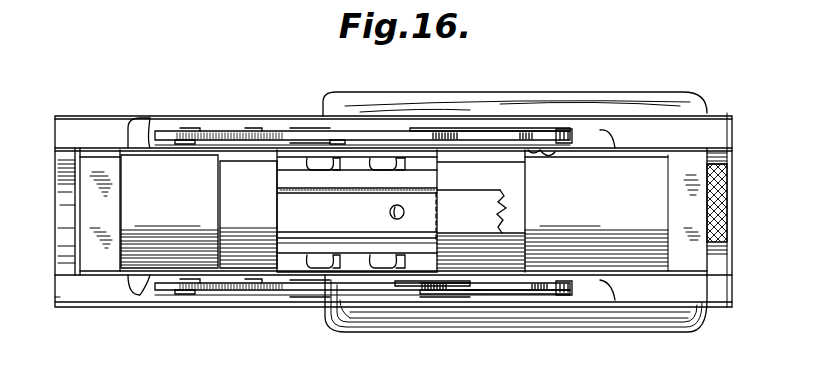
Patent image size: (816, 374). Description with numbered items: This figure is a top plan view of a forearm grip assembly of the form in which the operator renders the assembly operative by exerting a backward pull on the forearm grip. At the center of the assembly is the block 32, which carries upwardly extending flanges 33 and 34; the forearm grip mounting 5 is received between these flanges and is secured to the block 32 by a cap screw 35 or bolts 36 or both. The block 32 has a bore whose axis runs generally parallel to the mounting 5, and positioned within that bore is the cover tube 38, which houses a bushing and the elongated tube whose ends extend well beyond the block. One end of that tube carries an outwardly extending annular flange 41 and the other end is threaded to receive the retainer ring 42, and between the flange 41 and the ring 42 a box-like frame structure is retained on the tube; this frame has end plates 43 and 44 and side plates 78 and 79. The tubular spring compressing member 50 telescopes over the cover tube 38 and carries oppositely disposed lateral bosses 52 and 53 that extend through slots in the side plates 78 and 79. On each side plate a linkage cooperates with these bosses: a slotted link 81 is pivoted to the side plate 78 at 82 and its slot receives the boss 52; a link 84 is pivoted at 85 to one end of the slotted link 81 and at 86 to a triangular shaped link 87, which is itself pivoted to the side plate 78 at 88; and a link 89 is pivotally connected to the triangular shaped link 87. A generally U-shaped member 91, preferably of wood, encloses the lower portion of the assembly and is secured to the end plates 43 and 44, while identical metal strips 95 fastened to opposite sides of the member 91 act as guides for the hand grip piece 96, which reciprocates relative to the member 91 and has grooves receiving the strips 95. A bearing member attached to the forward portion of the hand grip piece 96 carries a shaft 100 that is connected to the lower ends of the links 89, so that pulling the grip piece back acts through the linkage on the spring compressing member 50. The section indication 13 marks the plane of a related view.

The forearm grip mounting 5 is at (515, 200).
The section line 13 is at (49, 283).
The block 32 is at (353, 164).
The flange 33 is at (297, 180).
The flange 34 is at (413, 243).
The cap screw 35 is at (389, 212).
The bolts 36 is at (320, 166).
The cover tube 38 is at (451, 170).
The annular flange 41 is at (76, 203).
The retainer ring 42 is at (732, 202).
The end plate 43 is at (88, 168).
The end plate 44 is at (732, 170).
The spring compressing member 50 is at (627, 173).
The boss 52 is at (545, 267).
The boss 53 is at (546, 158).
The side plate 78 is at (248, 214).
The side plate 79 is at (147, 147).
The slotted link 81 is at (530, 138).
The pivot 82 is at (470, 279).
The link 84 is at (487, 138).
The pivot 85 is at (553, 152).
The pivot 86 is at (428, 283).
The triangular shaped link 87 is at (300, 136).
The pivot 88 is at (345, 284).
The link 89 is at (232, 135).
The U-shaped member 91 is at (57, 303).
The metal strips 95 is at (213, 118).
The hand grip piece 96 is at (683, 333).
The shaft 100 is at (260, 278).